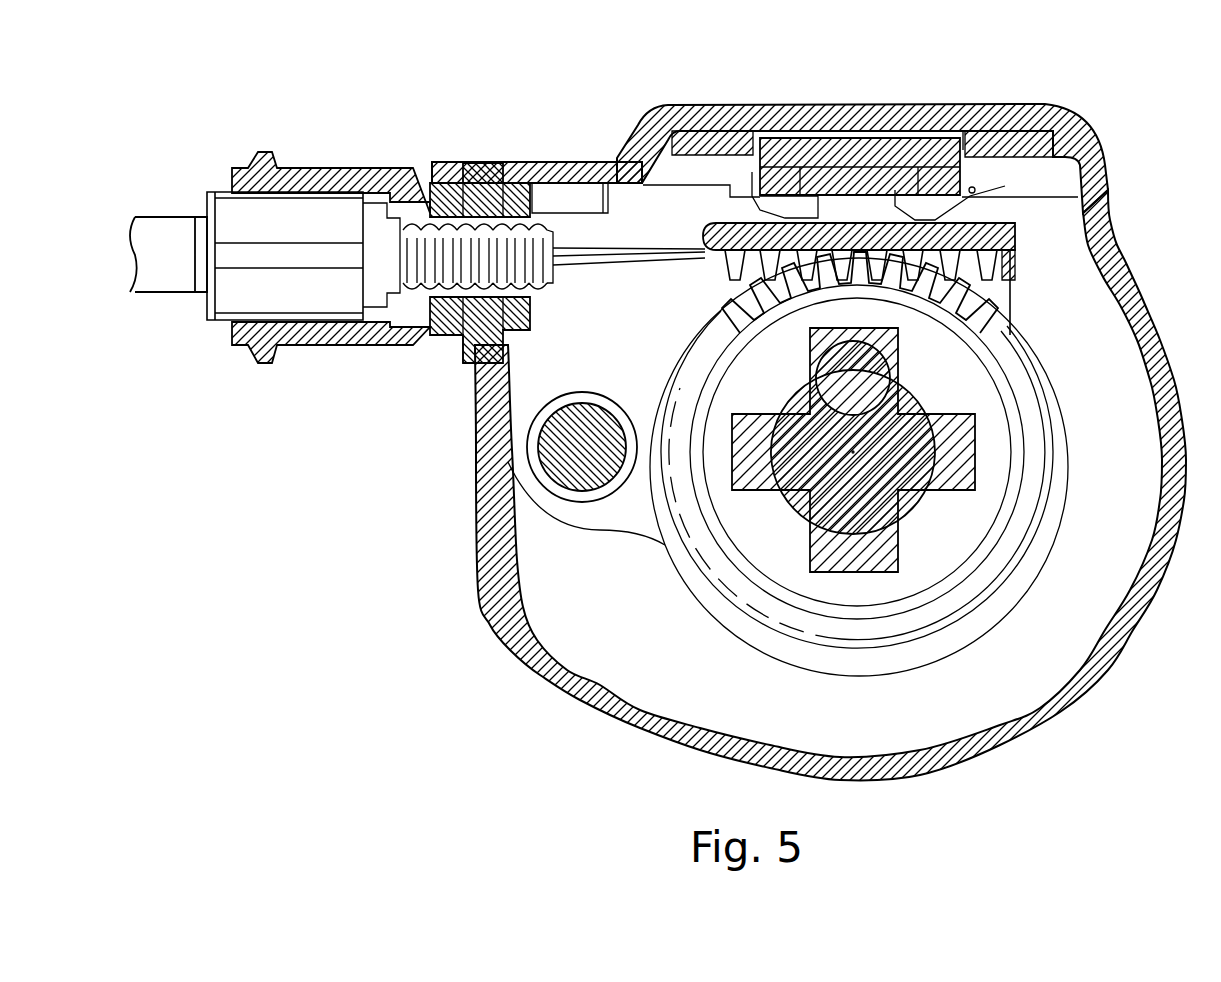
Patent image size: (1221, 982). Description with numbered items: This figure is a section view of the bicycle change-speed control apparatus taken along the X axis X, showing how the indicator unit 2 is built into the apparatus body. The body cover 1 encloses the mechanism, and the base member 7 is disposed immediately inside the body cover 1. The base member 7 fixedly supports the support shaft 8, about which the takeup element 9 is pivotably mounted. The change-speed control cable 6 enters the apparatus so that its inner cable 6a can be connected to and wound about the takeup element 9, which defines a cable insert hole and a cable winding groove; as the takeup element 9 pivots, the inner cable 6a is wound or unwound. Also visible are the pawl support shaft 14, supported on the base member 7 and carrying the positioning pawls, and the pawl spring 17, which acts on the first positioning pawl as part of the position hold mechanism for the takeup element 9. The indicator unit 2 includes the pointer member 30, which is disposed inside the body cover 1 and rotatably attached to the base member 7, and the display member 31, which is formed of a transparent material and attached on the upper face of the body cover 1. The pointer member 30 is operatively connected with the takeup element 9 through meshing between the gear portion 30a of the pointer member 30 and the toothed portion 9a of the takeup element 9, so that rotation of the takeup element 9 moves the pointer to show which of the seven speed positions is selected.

The body cover 1 is at (498, 632).
The indicator unit 2 is at (967, 92).
The change-speed control cable 6 is at (160, 230).
The inner cable 6a is at (632, 263).
The base member 7 is at (1080, 435).
The support shaft 8 is at (905, 482).
The takeup element 9 is at (668, 545).
The toothed portion 9a is at (1013, 327).
The pawl support shaft 14 is at (580, 478).
The pawl spring 17 is at (530, 450).
The pointer member 30 is at (813, 190).
The gear portion 30a is at (1010, 267).
The display member 31 is at (886, 125).
The X axis X is at (853, 454).